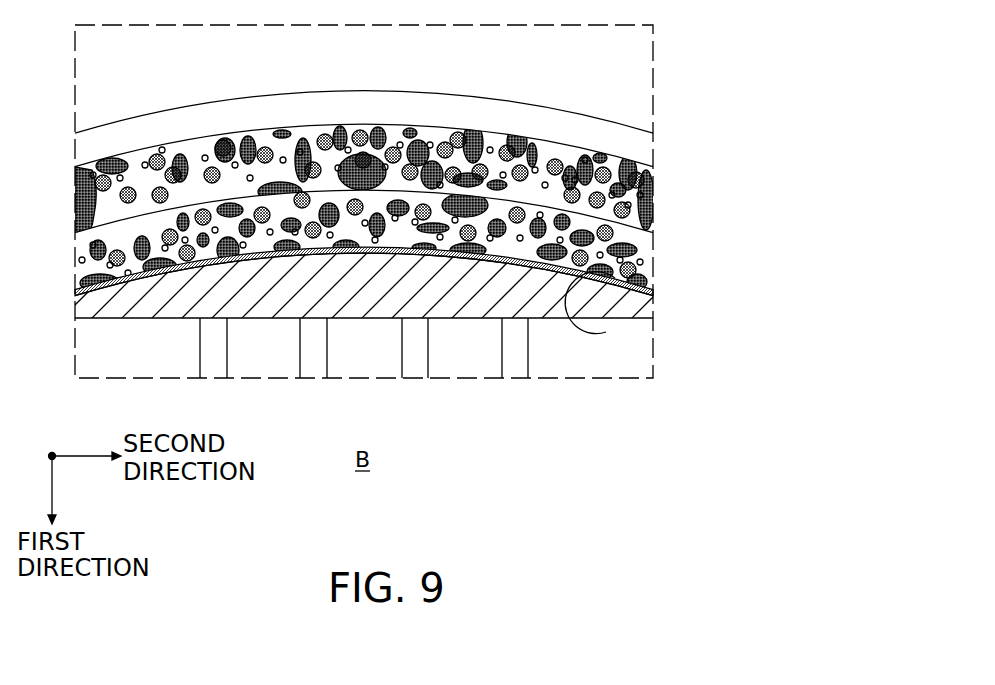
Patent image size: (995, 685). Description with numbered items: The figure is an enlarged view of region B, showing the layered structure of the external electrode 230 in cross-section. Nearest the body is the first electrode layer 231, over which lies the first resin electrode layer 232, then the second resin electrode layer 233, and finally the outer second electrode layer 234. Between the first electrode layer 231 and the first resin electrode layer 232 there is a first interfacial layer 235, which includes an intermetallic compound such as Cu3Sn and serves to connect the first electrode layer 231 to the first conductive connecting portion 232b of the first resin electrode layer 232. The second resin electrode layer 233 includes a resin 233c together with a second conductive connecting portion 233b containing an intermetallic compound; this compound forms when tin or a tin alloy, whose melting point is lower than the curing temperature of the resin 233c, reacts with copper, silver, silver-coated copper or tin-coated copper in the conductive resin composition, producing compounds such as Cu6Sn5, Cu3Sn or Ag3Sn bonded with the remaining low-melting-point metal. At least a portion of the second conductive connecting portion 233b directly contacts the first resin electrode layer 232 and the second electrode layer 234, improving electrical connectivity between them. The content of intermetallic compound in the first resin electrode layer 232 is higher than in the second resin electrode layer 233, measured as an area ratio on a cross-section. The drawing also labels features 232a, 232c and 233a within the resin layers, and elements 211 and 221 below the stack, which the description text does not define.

The light emitting element 211 is at (460, 362).
The pixel defining layer 221 is at (520, 362).
The external electrode 230 is at (688, 470).
The first electrode layer 231 is at (643, 305).
The first resin electrode layer 232 is at (750, 222).
The first particles 232a is at (618, 238).
The first conductive connecting portion 232b is at (642, 236).
The first barrier film 232c is at (645, 292).
The second resin electrode layer 233 is at (749, 212).
The second particles 233a is at (632, 170).
The second conductive connecting portion 233b is at (645, 216).
The resin 233c is at (657, 191).
The second electrode layer 234 is at (650, 147).
The first interfacial layer 235 is at (606, 332).